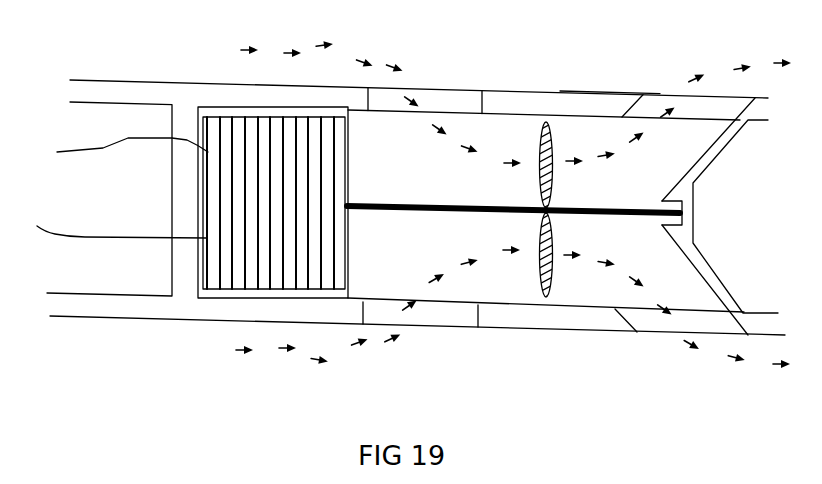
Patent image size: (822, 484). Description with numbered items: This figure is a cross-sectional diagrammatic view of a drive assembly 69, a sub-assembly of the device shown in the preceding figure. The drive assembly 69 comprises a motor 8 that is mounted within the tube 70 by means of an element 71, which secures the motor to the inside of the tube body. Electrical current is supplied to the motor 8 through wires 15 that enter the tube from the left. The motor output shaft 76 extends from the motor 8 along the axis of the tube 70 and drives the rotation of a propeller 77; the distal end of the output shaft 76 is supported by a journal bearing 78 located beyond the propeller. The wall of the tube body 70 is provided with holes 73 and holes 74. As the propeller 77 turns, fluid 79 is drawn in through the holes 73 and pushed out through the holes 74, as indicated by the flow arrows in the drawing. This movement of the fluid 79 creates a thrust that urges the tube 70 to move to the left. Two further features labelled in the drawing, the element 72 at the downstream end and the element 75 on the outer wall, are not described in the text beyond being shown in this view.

The motor 8 is at (238, 117).
The wires 15 is at (110, 188).
The drive assembly 69 is at (537, 70).
The tube 70 is at (87, 80).
The element 71 is at (170, 125).
The deflector cone 72 is at (712, 165).
The holes 73 is at (435, 88).
The holes 74 is at (663, 93).
The outer duct 75 is at (582, 91).
The motor output shaft 76 is at (433, 210).
The propeller 77 is at (552, 188).
The journal bearing 78 is at (660, 224).
The fluid 79 is at (337, 40).